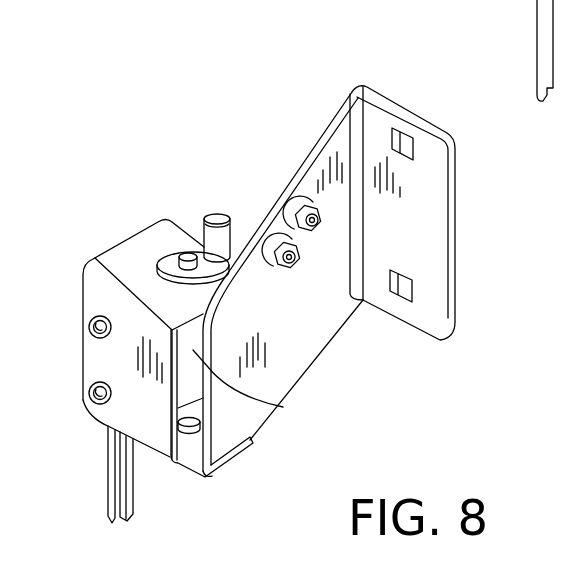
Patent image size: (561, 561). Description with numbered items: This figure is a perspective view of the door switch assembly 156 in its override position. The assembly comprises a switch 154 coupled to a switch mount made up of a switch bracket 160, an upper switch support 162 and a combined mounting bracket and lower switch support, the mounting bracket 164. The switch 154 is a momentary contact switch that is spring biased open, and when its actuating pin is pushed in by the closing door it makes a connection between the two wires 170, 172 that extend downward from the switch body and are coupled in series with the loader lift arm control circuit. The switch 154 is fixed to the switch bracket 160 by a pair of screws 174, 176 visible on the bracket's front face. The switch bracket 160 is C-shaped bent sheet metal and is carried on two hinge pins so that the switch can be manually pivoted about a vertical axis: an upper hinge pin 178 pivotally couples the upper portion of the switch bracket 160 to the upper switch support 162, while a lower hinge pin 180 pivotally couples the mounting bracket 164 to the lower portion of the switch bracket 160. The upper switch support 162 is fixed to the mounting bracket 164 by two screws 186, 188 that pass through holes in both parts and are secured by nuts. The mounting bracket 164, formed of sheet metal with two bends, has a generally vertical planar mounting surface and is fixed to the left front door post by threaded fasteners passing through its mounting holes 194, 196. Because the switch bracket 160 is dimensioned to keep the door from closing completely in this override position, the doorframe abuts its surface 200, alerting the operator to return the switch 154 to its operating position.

The switch 154 is at (283, 407).
The door switch assembly 156 is at (209, 90).
The switch bracket 160 is at (137, 258).
The upper switch support 162 is at (231, 231).
The mounting bracket 164 is at (321, 317).
The wire 170 is at (106, 472).
The wire 172 is at (133, 484).
The screw 174 is at (89, 325).
The screw 176 is at (89, 392).
The upper hinge pin 178 is at (187, 253).
The lower hinge pin 180 is at (201, 418).
The screw 186 is at (327, 223).
The screw 188 is at (301, 263).
The mounting hole 194 is at (405, 135).
The mounting hole 196 is at (410, 303).
The surface 200 is at (137, 405).